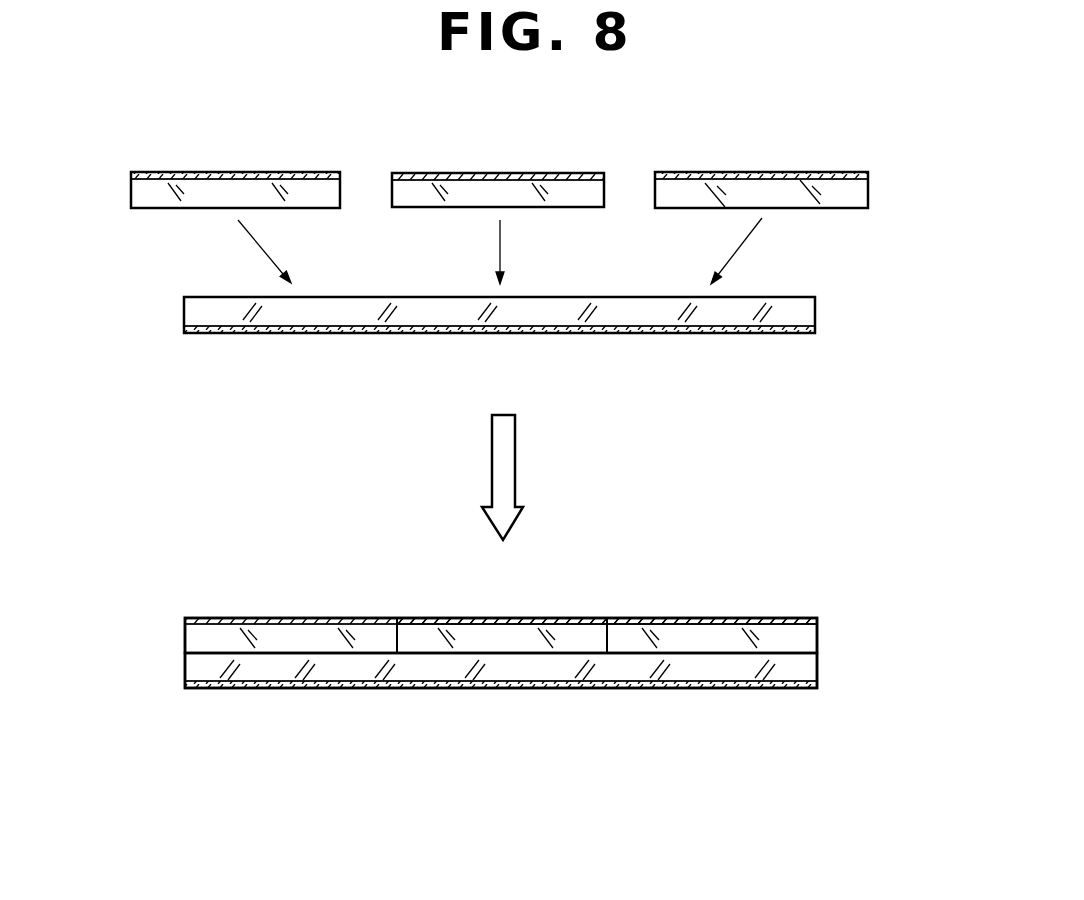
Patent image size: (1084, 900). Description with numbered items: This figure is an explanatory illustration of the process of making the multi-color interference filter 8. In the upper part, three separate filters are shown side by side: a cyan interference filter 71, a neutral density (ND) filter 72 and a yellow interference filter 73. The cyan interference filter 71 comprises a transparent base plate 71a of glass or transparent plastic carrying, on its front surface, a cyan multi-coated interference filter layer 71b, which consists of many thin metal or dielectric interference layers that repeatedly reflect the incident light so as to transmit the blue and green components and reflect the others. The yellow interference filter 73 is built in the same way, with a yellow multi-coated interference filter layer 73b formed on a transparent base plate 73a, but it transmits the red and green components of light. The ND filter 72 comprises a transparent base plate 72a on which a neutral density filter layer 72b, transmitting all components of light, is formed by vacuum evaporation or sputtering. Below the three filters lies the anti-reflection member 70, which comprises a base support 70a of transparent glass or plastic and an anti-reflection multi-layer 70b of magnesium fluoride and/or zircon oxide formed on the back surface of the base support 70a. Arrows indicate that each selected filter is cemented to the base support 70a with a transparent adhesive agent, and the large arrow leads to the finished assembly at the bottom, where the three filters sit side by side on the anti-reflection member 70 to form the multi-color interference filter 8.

The multi-color interference filter 8 is at (426, 708).
The anti-reflection member 70 is at (176, 317).
The base support 70a is at (805, 313).
The anti-reflection multi-layer 70b is at (277, 340).
The cyan interference filter 71 is at (127, 174).
The transparent base plate 71a is at (172, 197).
The cyan multi-coated interference filter layer 71b is at (227, 172).
The neutral density (ND) filter 72 is at (406, 216).
The transparent base plate 72a is at (580, 197).
The neutral density filter layer 72b is at (500, 172).
The yellow interference filter 73 is at (872, 168).
The transparent base plate 73a is at (808, 197).
The yellow multi-coated interference filter layer 73b is at (768, 172).